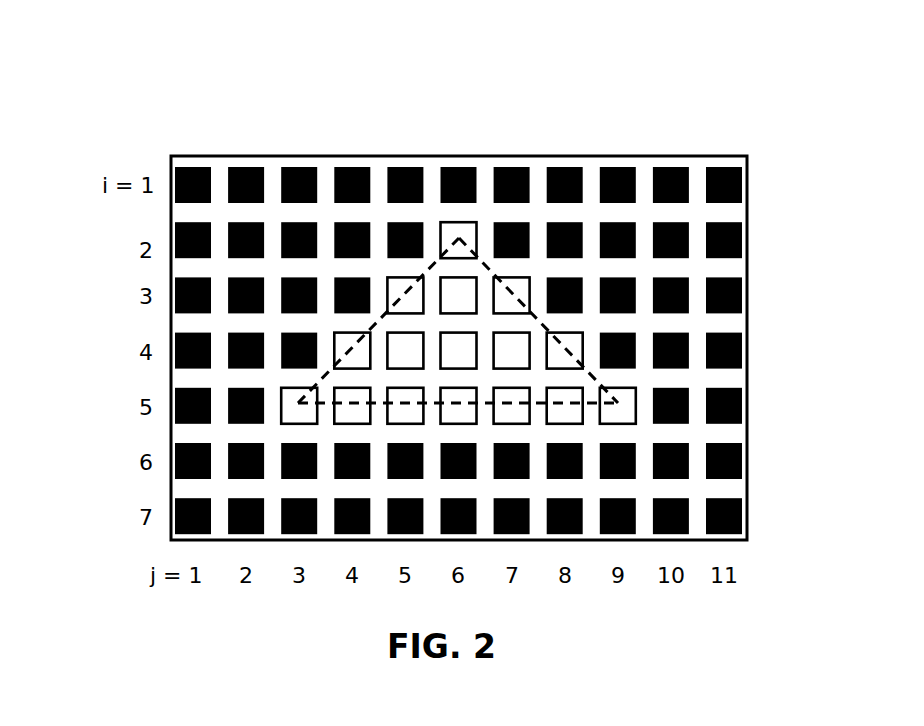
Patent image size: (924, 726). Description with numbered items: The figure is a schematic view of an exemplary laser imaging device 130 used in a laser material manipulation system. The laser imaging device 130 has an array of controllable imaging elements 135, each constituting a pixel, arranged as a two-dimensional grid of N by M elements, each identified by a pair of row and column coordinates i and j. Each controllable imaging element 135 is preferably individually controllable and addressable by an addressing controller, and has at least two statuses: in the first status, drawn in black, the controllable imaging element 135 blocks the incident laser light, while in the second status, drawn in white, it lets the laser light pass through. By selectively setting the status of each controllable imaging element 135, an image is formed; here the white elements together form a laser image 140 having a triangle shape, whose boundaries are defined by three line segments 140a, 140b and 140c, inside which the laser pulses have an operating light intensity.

The laser imaging device 130 is at (165, 110).
The controllable imaging elements 135 is at (408, 168).
The laser image 140 is at (488, 316).
The line segment 140a is at (548, 328).
The line segment 140b is at (482, 403).
The line segment 140c is at (380, 317).